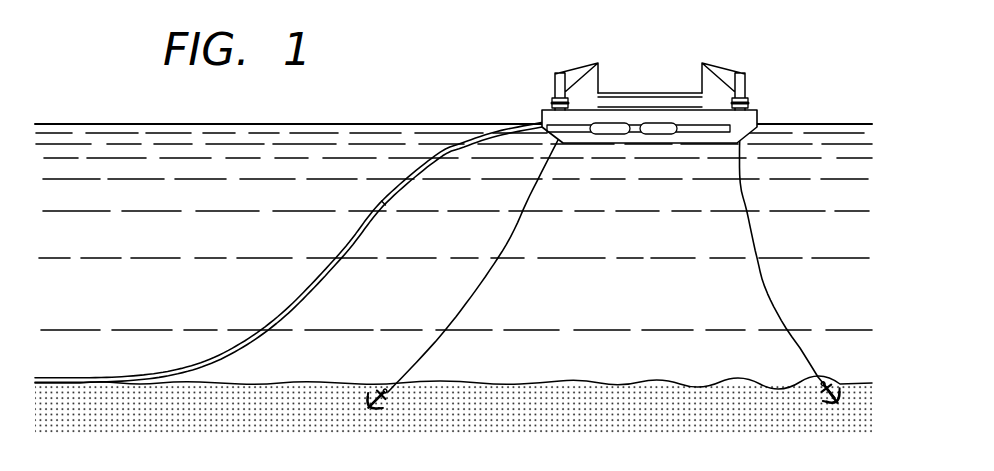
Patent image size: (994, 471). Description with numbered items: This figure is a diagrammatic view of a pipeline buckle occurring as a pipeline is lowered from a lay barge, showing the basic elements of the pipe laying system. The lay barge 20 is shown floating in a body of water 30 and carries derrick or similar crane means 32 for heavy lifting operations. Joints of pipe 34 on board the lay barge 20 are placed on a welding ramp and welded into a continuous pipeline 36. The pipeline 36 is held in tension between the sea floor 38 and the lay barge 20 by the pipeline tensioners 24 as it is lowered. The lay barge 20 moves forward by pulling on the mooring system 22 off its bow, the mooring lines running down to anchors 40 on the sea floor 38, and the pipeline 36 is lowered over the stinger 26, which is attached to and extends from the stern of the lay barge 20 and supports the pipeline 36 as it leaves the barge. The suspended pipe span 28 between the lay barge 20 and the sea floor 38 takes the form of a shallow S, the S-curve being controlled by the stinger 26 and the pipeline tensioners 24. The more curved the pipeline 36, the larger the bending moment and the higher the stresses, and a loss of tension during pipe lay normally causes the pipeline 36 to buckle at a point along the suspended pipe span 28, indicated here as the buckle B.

The lay barge 20 is at (659, 86).
The mooring system 22 is at (487, 285).
The pipeline tensioners 24 is at (653, 126).
The stinger 26 is at (458, 140).
The suspended pipe span 28 is at (338, 248).
The body of water 30 is at (81, 152).
The crane means 32 is at (552, 108).
The joints of pipe 34 is at (679, 97).
The pipeline 36 is at (52, 383).
The sea floor 38 is at (572, 397).
The anchor 40 is at (830, 387).
The buckle B is at (284, 316).